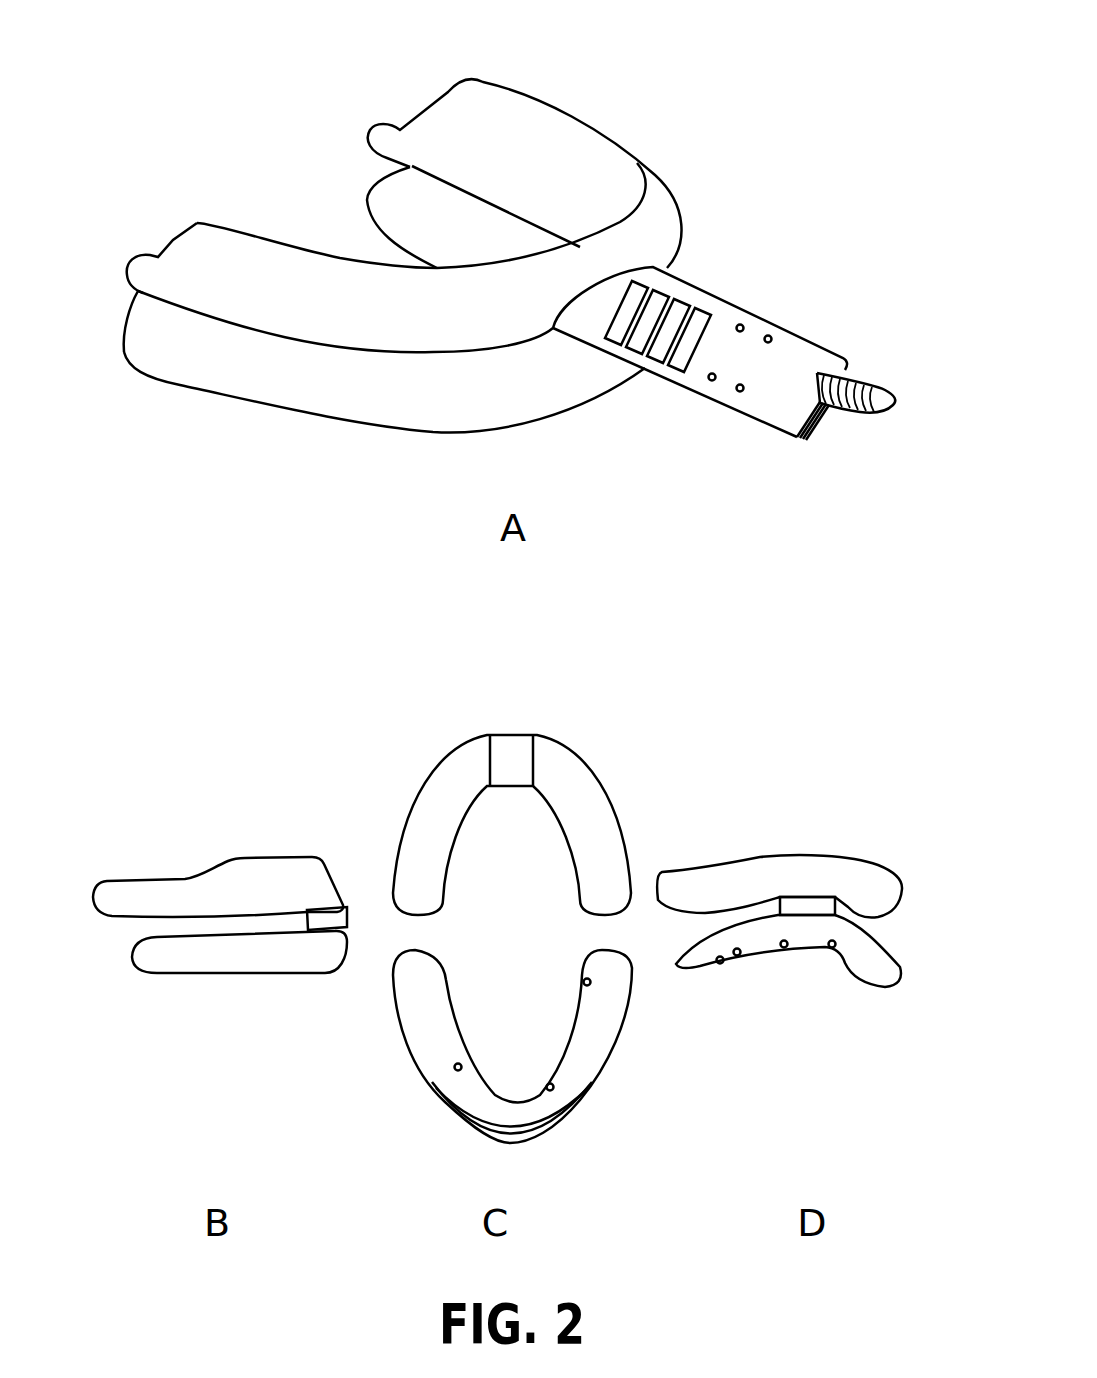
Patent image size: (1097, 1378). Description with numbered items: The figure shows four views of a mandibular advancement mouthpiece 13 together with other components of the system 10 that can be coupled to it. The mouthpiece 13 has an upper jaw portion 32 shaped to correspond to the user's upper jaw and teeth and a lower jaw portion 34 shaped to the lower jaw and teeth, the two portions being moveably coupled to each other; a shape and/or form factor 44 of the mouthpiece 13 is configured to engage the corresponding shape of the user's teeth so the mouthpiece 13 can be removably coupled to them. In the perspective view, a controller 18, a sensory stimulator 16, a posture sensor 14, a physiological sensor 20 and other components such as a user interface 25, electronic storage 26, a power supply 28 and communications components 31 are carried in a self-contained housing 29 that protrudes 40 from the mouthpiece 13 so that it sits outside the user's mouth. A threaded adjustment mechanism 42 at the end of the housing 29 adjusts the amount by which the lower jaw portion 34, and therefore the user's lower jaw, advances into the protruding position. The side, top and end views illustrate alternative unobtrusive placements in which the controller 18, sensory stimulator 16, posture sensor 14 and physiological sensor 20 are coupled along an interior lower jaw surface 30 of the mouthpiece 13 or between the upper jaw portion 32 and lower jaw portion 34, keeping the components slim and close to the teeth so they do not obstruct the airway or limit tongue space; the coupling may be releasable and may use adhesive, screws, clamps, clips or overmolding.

The system 10 is at (845, 85).
The mandibular advancement mouthpiece 13 is at (227, 850).
The posture sensor 14 is at (663, 373).
The sensory stimulator 16 is at (640, 367).
The controller 18 is at (623, 353).
The physiological sensor 20 is at (603, 343).
The user interface 25 is at (711, 381).
The electronic storage 26 is at (739, 392).
The power supply 28 is at (740, 325).
The housing 29 is at (765, 250).
The interior lower jaw surface 30 is at (365, 190).
The communications components 31 is at (808, 906).
The upper jaw portion 32 is at (447, 72).
The lower jaw portion 34 is at (160, 390).
The protrusion 40 is at (685, 264).
The threaded adjustment mechanism 42 is at (850, 422).
The shape and/or form factor 44 is at (558, 140).